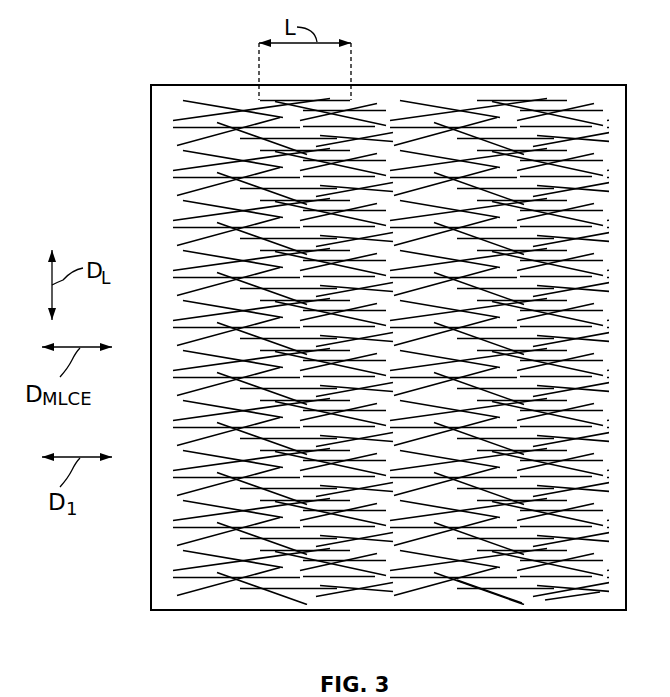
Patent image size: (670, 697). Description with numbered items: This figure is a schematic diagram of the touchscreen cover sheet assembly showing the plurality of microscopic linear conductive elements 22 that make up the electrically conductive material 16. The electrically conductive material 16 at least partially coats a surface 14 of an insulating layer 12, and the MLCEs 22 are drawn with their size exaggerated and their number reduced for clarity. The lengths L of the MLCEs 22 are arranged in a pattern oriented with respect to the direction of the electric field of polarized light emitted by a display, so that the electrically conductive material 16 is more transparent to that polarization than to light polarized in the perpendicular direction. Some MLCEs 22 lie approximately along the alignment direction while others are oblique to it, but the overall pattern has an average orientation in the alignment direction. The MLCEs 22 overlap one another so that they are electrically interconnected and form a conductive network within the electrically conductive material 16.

The electrically conductive material 16 is at (564, 88).
The microscopic linear conductive elements 22 is at (447, 105).
The insulating layer 12 is at (522, 603).
The surface 14 is at (592, 605).